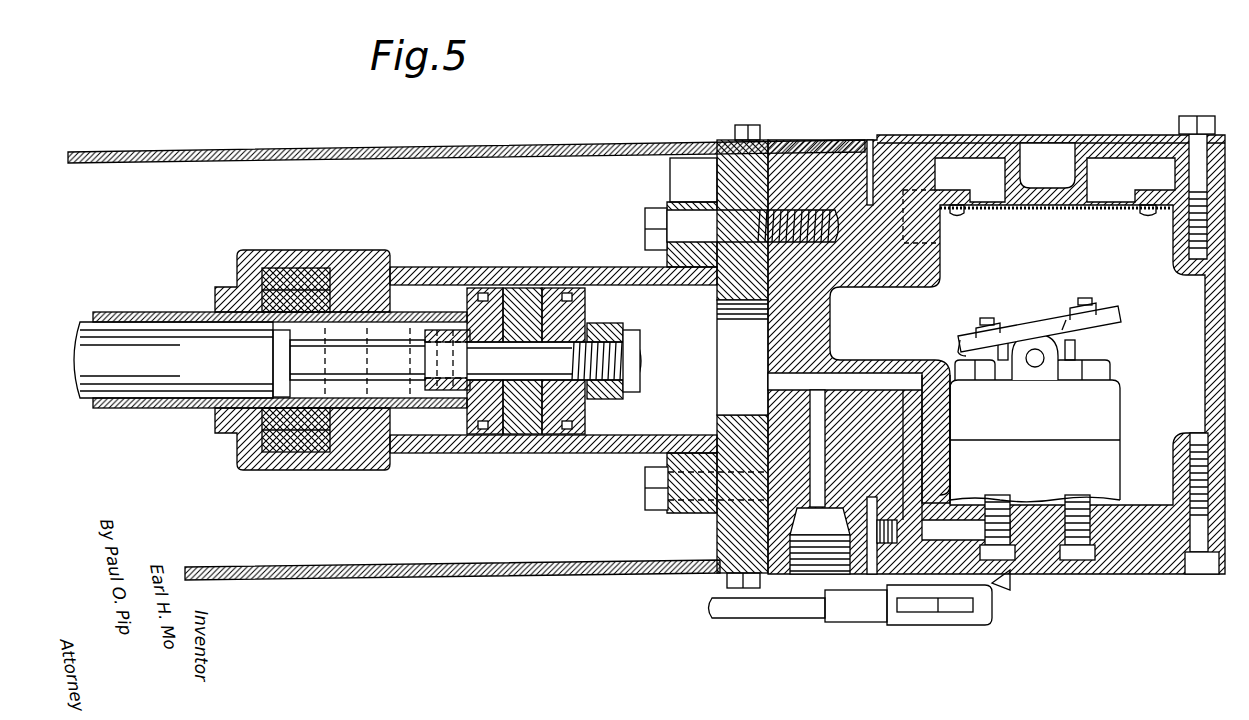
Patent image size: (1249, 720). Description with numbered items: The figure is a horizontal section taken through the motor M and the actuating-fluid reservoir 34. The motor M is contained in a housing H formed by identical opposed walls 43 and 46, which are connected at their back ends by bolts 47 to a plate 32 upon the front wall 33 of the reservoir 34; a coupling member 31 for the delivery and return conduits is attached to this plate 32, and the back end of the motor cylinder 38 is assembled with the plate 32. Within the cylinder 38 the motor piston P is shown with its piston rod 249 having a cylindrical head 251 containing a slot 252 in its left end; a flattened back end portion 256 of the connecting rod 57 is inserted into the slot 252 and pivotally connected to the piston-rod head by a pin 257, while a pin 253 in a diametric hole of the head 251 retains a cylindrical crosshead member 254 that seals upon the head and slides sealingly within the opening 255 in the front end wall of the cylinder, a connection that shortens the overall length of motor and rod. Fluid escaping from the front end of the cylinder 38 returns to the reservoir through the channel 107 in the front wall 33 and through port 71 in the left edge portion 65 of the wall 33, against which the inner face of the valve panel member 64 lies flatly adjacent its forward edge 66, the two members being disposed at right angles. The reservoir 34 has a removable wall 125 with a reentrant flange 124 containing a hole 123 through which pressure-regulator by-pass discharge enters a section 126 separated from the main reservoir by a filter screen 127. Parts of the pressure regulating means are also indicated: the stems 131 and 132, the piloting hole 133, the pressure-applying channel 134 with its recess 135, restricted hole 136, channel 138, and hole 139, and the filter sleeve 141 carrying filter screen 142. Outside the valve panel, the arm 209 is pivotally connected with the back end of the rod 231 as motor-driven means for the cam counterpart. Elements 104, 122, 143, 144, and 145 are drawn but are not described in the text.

The wall 43 is at (428, 152).
The wall 46 is at (498, 578).
The housing H is at (415, 580).
The coupling member 31 is at (690, 158).
The plate 32 is at (752, 158).
The front wall 33 is at (812, 140).
The bolts 47 is at (742, 126).
The passage 104 is at (725, 378).
The hidden passage 122 is at (945, 247).
The hole 123 is at (952, 214).
The reentrant flange 124 is at (976, 214).
The removable wall 125 is at (1005, 143).
The section 126 is at (968, 165).
The filter screen 127 is at (1038, 212).
The pressure-applying channel 134 is at (1190, 527).
The recess 135 is at (1199, 574).
The valve panel member 64 is at (1092, 574).
The channel 107 is at (878, 378).
The port 71 is at (935, 410).
The left edge portion 65 is at (950, 482).
The forward edge 66 is at (874, 555).
The arm 209 is at (995, 596).
The rod 231 is at (773, 618).
The stem 131 is at (1120, 460).
The stem 132 is at (1120, 405).
The hole 133 is at (960, 366).
The hole 136 is at (1078, 350).
The pivot bracket 143 is at (1032, 350).
The filter screen 142 is at (1036, 368).
The lever arm 145 is at (1112, 318).
The channel 138 is at (990, 324).
The hole 139 is at (996, 320).
The sleeve 141 is at (1060, 325).
The spring 144 is at (968, 344).
The reservoir 34 is at (1044, 276).
The motor M is at (474, 256).
The opening 255 is at (292, 250).
The crosshead member 254 is at (196, 305).
The connecting rod 57 is at (155, 335).
The slot 252 is at (338, 335).
The flattened back end portion 256 is at (357, 360).
The cylindrical head 251 is at (361, 359).
The pin 257 is at (318, 362).
The pin 253 is at (452, 356).
The piston rod 249 is at (545, 366).
The piston P is at (518, 285).
The cylinder 38 is at (545, 268).